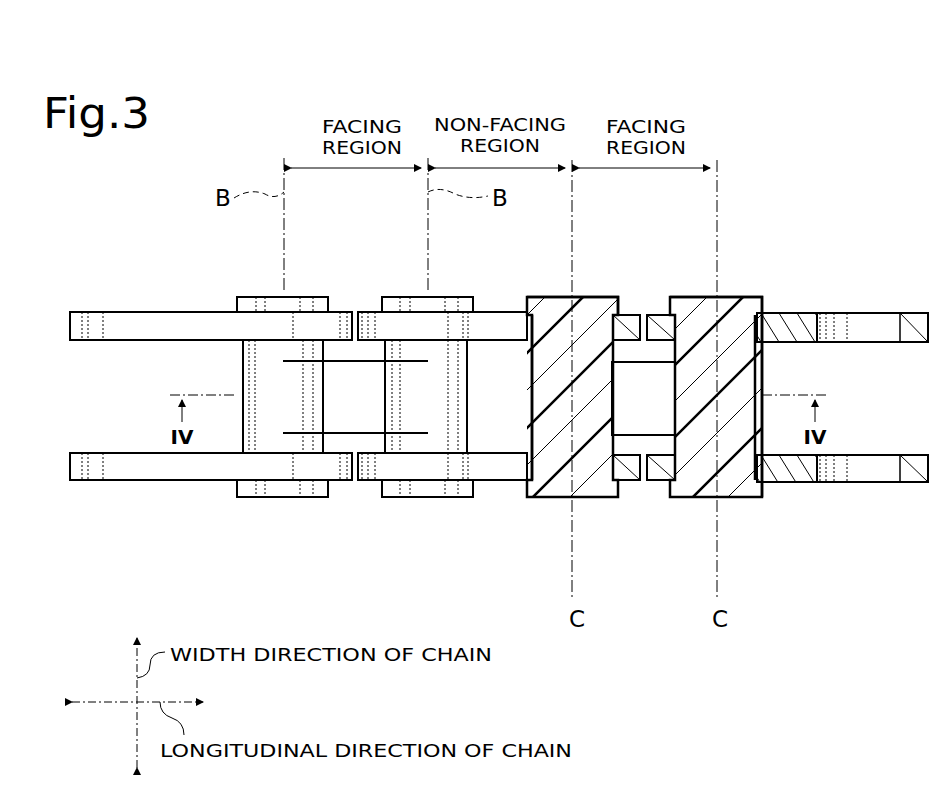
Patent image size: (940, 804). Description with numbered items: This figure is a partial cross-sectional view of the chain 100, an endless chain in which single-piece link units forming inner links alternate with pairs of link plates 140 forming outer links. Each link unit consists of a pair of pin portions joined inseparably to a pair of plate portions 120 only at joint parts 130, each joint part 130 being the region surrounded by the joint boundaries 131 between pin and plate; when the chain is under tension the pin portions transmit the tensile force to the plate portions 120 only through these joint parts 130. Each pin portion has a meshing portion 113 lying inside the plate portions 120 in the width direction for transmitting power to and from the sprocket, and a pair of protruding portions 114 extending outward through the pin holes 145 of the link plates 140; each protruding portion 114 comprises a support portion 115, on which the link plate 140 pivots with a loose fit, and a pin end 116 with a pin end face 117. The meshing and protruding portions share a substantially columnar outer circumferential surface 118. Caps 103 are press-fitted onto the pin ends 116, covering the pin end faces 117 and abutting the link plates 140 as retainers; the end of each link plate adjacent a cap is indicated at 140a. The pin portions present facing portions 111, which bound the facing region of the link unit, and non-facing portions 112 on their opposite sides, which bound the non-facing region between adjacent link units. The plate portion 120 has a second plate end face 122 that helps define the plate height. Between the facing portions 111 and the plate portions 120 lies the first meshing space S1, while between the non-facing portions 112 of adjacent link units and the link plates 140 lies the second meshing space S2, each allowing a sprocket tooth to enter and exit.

The chain 100 is at (798, 208).
The cap 103 is at (417, 488).
The facing portion 111 is at (373, 314).
The non-facing portion 112 is at (512, 297).
The meshing portion 113 is at (532, 414).
The protruding portion 114 is at (745, 580).
The support portion 115 is at (782, 484).
The pin end 116 is at (744, 498).
The pin end face 117 is at (740, 312).
The outer circumferential surface 118 is at (250, 432).
The plate portion 120 is at (367, 428).
The second plate end face 122 is at (345, 455).
The joint part 130 is at (270, 297).
The joint boundary 131 is at (633, 486).
The link plate 140 is at (152, 345).
The plate end face 140a is at (478, 297).
The pin hole 145 is at (540, 485).
The first meshing space S1 is at (310, 482).
The second meshing space S2 is at (482, 482).